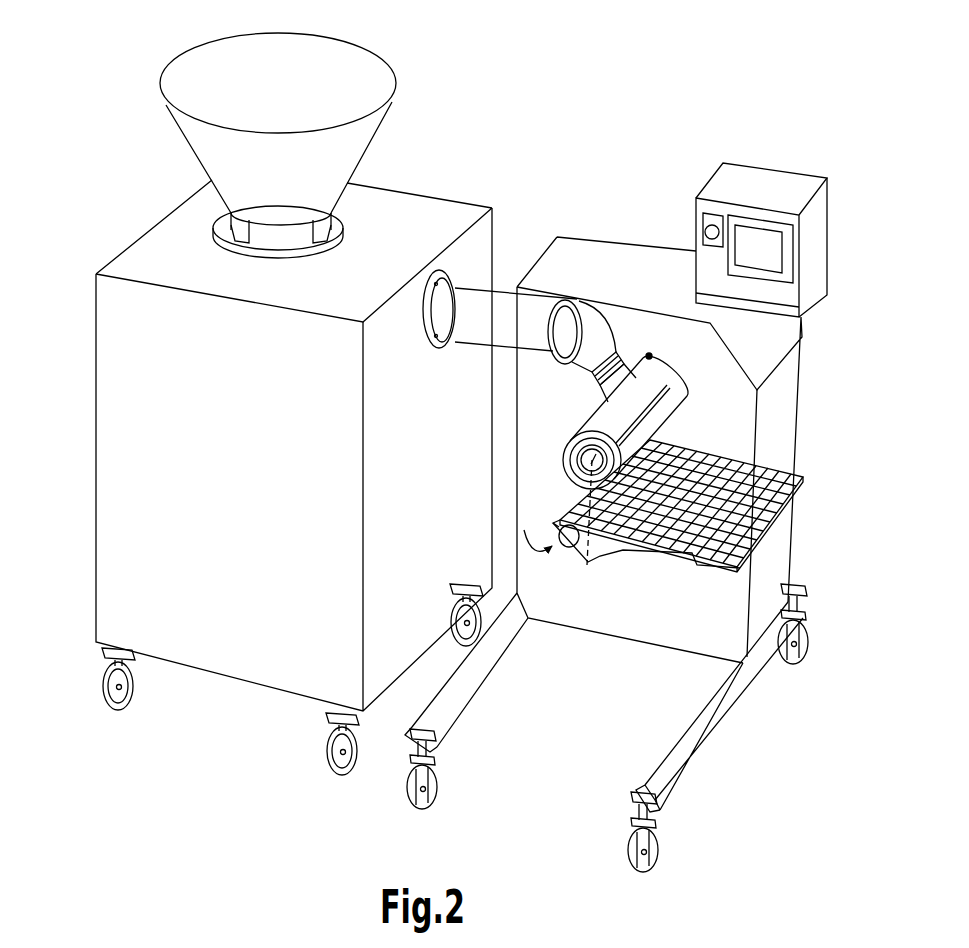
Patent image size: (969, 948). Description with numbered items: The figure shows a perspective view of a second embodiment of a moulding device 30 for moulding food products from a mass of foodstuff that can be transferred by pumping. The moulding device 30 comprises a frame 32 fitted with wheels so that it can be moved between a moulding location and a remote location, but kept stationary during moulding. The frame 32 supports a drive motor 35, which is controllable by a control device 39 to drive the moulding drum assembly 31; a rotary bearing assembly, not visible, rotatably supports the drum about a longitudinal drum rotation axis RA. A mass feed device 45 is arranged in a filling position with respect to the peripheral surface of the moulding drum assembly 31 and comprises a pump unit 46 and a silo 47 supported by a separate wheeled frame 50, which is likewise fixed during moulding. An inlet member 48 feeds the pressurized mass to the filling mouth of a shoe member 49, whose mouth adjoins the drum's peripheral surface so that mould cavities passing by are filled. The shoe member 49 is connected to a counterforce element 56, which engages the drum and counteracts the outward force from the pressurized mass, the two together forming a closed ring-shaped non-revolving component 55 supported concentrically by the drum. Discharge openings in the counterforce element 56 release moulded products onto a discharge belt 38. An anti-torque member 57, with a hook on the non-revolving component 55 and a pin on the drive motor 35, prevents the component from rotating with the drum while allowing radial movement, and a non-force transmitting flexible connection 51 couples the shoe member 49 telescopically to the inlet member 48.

The moulding device 30 is at (851, 353).
The moulding drum assembly 31 is at (638, 380).
The frame 32 is at (707, 725).
The drive motor 35 is at (783, 390).
The discharge belt 38 is at (777, 497).
The control device 39 is at (815, 226).
The mass feed device 45 is at (441, 80).
The pump unit 46 is at (120, 358).
The silo 47 is at (343, 133).
The inlet member 48 is at (510, 310).
The shoe member 49 is at (603, 404).
The frame 50 is at (92, 658).
The non-force transmitting flexible connection 51 is at (606, 363).
The non-revolving component 55 is at (718, 372).
The counterforce element 56 is at (629, 417).
The anti-torque member 57 is at (653, 360).
The longitudinal drum rotation axis RA is at (556, 497).